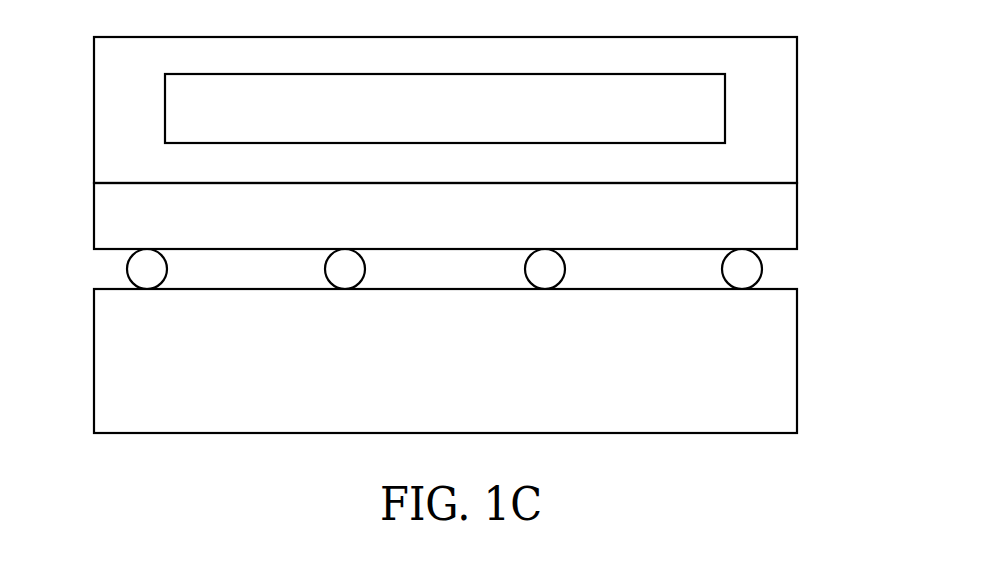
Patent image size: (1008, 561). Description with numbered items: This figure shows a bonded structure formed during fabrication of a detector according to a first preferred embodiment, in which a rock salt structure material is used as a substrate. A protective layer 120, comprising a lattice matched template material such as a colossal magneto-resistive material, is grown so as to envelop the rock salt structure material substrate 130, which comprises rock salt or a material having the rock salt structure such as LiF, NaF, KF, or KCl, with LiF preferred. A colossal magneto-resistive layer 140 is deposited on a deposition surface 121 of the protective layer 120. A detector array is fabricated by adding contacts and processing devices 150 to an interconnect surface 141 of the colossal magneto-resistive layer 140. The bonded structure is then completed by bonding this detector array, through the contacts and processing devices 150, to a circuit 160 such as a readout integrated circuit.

The protective layer 120 is at (763, 63).
The rock salt structure material substrate 130 is at (698, 112).
The deposition surface 121 is at (752, 183).
The colossal magneto-resistive layer 140 is at (763, 232).
The interconnect surface 141 is at (115, 250).
The contacts and processing devices 150 is at (762, 268).
The circuit 160 is at (757, 363).